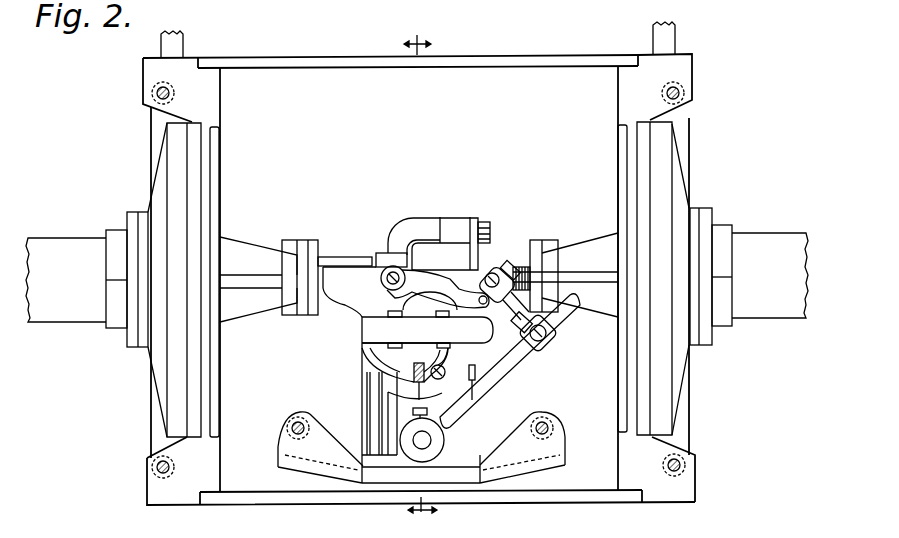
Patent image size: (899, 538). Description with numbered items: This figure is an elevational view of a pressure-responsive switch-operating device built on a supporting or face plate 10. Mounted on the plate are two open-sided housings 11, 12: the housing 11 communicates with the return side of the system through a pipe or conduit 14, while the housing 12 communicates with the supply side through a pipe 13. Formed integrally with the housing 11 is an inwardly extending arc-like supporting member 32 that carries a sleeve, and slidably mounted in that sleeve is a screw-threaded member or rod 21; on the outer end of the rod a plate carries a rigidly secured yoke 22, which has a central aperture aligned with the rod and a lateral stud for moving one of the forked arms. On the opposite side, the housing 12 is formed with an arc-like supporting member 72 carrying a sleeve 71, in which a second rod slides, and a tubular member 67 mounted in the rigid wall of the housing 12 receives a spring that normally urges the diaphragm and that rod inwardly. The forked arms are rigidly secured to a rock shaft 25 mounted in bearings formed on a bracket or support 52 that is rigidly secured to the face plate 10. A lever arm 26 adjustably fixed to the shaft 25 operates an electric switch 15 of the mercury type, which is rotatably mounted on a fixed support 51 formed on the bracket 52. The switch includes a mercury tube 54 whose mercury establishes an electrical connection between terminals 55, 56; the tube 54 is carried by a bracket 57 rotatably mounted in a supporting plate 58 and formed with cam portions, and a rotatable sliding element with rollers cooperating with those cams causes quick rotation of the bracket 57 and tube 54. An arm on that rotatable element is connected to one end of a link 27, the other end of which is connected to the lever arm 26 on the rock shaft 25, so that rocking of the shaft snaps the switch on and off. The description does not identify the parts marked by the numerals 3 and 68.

The section line 3 is at (420, 275).
The supporting plate 10 is at (578, 505).
The housing 11 is at (658, 404).
The housing 12 is at (165, 382).
The pipe 13 is at (173, 44).
The pipe or conduit 14 is at (670, 38).
The electric switch 15 is at (365, 344).
The screw-threaded member or rod 21 is at (520, 252).
The yoke 22 is at (446, 217).
The rock shaft 25 is at (416, 437).
The lever arm 26 is at (523, 350).
The link 27 is at (530, 328).
The arc-like supporting member 32 is at (582, 245).
The fixed support 51 is at (343, 277).
The bracket or support 52 is at (548, 472).
The mercury tube 54 is at (362, 325).
The terminal 55 is at (416, 381).
The terminal 56 is at (477, 392).
The bracket 57 is at (387, 313).
The supporting plate 58 is at (386, 353).
The tubular member 67 is at (60, 244).
The right shaft 68 is at (761, 242).
The sleeve 71 is at (318, 240).
The arc-like supporting member 72 is at (230, 247).